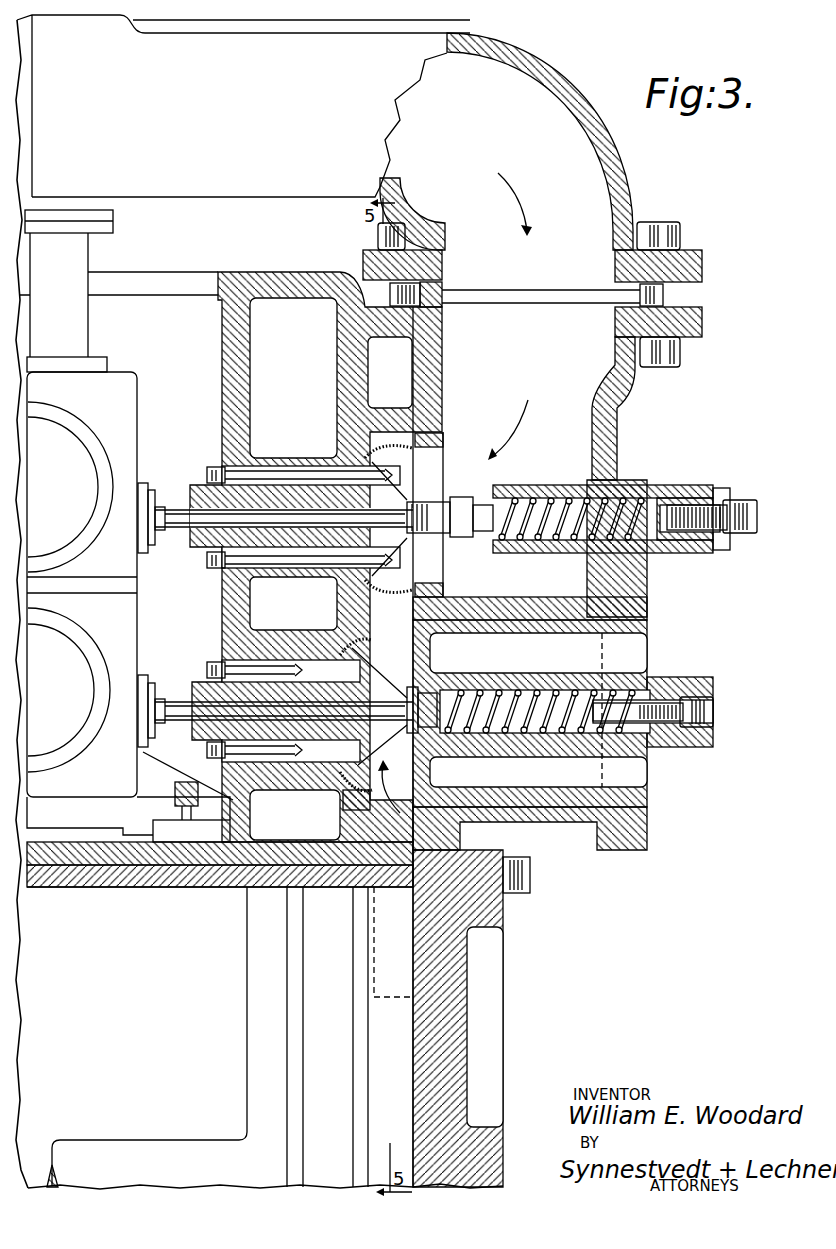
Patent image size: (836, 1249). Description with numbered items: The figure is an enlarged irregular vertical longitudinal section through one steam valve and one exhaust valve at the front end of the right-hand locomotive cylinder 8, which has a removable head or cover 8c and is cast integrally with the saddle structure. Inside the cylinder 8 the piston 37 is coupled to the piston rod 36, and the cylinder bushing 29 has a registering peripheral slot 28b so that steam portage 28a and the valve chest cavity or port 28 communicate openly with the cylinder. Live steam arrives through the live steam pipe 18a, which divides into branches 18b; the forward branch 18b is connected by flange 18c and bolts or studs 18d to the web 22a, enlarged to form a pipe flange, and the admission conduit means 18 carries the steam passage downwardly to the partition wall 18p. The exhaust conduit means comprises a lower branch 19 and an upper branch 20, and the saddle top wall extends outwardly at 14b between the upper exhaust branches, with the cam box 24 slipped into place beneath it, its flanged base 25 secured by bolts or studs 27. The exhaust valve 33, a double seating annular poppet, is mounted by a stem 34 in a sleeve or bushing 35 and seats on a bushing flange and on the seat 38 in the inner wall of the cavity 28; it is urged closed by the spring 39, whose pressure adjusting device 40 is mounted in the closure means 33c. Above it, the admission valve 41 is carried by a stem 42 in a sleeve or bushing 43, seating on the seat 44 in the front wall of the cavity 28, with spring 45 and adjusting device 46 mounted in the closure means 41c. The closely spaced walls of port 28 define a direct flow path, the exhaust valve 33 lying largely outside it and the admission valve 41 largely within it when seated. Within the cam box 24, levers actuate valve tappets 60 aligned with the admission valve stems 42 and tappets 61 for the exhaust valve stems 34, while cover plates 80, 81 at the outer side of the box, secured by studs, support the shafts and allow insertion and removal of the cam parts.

The live steam pipe 18a is at (243, 106).
The branch of live steam pipe 18b is at (251, 108).
The flange 18c is at (700, 262).
The bolts or studs 18d is at (665, 296).
The steam admission conduit means 18 is at (633, 390).
The outward extension of top wall 14b is at (135, 300).
The upper branch of exhaust conduit 20 is at (252, 381).
The web enlarged to form a pipe flange 22a is at (390, 372).
The seat 44 is at (437, 447).
The valve tappet 60 is at (157, 500).
The sleeve or bushing 43 is at (200, 487).
The stem 42 is at (180, 537).
The cover plate 80 is at (70, 487).
The cover plate 81 is at (69, 690).
The cam box 24 is at (130, 596).
The tappet 61 is at (157, 700).
The sleeve or bushing 35 is at (198, 681).
The stem 34 is at (328, 700).
The admission valve 41 is at (440, 566).
The cavity or port 28 is at (331, 747).
The spring 45 is at (524, 506).
The adjusting device 46 is at (748, 508).
The closure means 41c is at (645, 578).
The partition wall 18p is at (546, 590).
The pressure adjusting device 40 is at (697, 728).
The spring 39 is at (566, 734).
The closure means 33c is at (647, 812).
The seat 38 is at (366, 803).
The steam portage 28a is at (370, 848).
The peripheral slot 28b is at (370, 872).
The bolts or studs 27 is at (188, 781).
The flanged base 25 is at (191, 816).
The cylinder 8 is at (85, 846).
The lower branch of exhaust conduit 19 is at (253, 814).
The exhaust valve 33 is at (327, 772).
The cylinder bushing 29 is at (224, 888).
The piston 37 is at (247, 1024).
The piston rod 36 is at (113, 1148).
The removable head or cover 8c is at (497, 910).